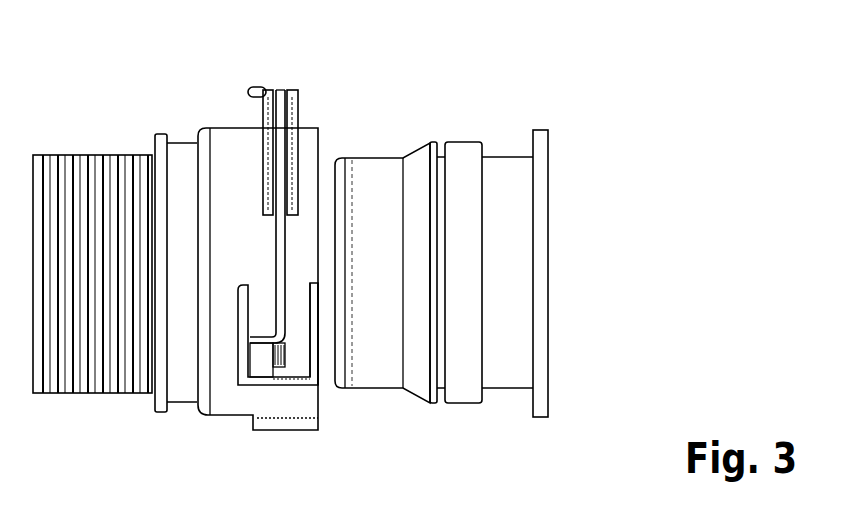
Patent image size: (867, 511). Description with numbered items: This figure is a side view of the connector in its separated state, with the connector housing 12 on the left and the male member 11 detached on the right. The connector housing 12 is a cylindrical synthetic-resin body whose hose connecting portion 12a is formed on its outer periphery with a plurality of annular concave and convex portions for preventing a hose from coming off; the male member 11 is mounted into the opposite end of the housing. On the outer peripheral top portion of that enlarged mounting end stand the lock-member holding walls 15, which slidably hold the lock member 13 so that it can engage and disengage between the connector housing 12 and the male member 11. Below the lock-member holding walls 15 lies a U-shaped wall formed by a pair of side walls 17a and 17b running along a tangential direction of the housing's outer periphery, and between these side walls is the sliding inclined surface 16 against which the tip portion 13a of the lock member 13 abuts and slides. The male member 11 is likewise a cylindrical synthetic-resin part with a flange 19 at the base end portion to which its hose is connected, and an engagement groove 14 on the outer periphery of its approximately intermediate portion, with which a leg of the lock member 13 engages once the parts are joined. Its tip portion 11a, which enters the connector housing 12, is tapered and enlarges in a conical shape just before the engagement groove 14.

The male member 11 is at (458, 128).
The tip portion 11a is at (365, 168).
The connector housing 12 is at (173, 120).
The hose connecting portion 12a is at (92, 153).
The lock member 13 is at (280, 87).
The tip portion 13a is at (262, 342).
The engagement groove 14 is at (438, 200).
The lock-member holding wall 15 is at (297, 108).
The sliding inclined surface 16 is at (262, 364).
The side wall 17a is at (315, 328).
The side wall 17b is at (245, 322).
The flange 19 is at (547, 138).